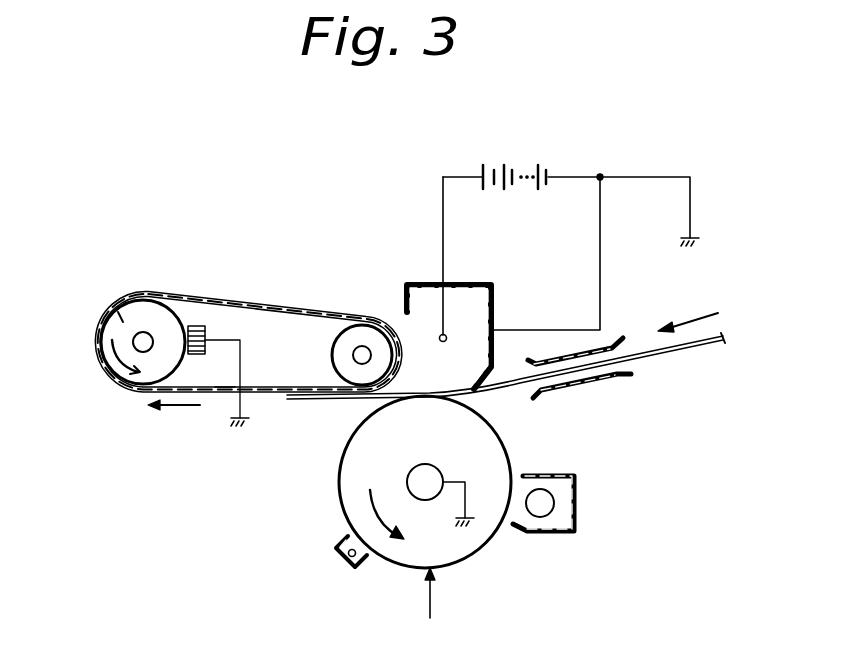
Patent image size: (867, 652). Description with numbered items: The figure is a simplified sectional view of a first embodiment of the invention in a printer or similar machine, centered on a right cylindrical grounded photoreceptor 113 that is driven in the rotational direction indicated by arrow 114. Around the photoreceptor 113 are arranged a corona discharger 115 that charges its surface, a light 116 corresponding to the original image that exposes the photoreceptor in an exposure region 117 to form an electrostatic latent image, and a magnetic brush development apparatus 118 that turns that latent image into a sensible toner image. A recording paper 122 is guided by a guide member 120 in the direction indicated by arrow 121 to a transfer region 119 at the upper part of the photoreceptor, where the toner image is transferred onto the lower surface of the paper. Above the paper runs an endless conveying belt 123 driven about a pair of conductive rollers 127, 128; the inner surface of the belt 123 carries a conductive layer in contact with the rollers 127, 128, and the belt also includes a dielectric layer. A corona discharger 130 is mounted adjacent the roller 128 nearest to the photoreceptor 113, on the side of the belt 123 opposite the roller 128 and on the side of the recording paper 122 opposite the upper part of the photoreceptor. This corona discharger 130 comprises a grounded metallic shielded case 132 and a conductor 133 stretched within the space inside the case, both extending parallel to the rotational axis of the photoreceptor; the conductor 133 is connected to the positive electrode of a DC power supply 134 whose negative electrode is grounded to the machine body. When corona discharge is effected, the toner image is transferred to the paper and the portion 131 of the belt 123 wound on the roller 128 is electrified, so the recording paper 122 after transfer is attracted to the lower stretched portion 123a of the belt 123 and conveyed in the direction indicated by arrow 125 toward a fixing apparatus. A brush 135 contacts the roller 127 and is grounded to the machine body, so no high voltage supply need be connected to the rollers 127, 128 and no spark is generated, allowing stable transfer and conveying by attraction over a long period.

The photoreceptor 113 is at (503, 473).
The arrow 114 is at (360, 510).
The corona discharger 115 is at (336, 565).
The light 116 is at (430, 598).
The exposure region 117 is at (425, 572).
The magnetic brush development apparatus 118 is at (542, 505).
The transfer region 119 is at (429, 396).
The guide member 120 is at (590, 392).
The arrow 121 is at (692, 325).
The recording paper 122 is at (690, 348).
The belt 123 is at (165, 293).
The lower stretched portion 123a is at (222, 392).
The arrow 125 is at (180, 406).
The conductive roller 127 is at (118, 312).
The conductive roller 128 is at (357, 340).
The corona discharger 130 is at (420, 284).
The portion of the belt 131 is at (395, 353).
The shielded case 132 is at (493, 314).
The conductor 133 is at (448, 325).
The DC power supply 134 is at (480, 173).
The brush 135 is at (215, 322).